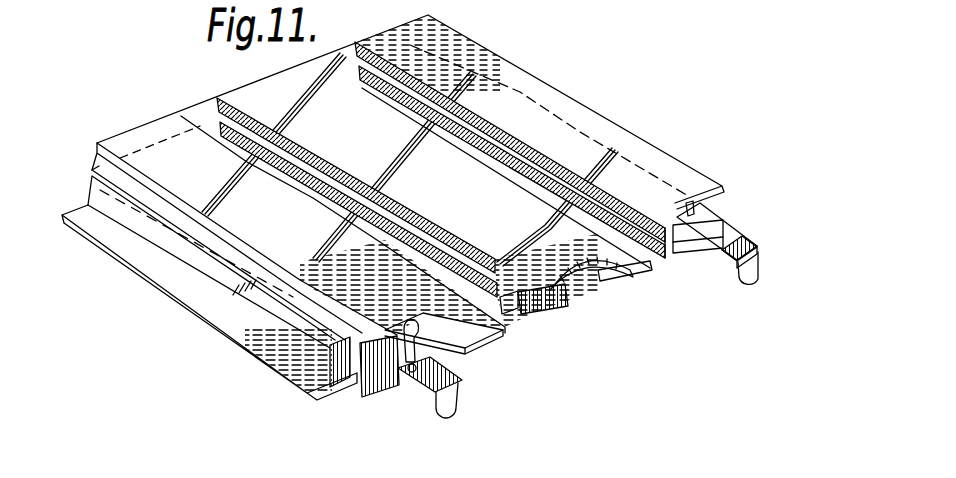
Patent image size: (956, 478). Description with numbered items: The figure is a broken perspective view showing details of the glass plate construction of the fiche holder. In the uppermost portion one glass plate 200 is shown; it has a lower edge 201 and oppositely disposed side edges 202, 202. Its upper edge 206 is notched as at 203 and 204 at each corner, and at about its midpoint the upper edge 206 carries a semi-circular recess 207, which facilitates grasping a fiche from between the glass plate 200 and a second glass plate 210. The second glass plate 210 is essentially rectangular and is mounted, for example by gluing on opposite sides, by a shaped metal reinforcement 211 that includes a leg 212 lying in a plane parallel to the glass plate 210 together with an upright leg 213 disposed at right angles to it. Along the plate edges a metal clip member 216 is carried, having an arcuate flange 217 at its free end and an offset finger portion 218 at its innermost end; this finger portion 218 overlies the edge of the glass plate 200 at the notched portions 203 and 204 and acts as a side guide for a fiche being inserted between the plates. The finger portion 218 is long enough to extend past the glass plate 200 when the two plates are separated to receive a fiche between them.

The glass plate 200 is at (480, 84).
The lower edge 201 is at (283, 74).
The side edges 202 is at (533, 72).
The notch 203 is at (428, 338).
The notch 204 is at (722, 190).
The upper edge 206 is at (553, 312).
The semi-circular recess 207 is at (587, 265).
The second glass plate 210 is at (533, 153).
The shaped metal reinforcement 211 is at (233, 351).
The leg 212 is at (200, 296).
The upright leg 213 is at (313, 340).
The metal clip member 216 is at (455, 386).
The arcuate flange 217 is at (762, 271).
The offset finger portion 218 is at (423, 343).